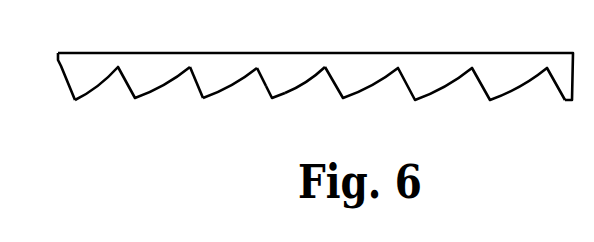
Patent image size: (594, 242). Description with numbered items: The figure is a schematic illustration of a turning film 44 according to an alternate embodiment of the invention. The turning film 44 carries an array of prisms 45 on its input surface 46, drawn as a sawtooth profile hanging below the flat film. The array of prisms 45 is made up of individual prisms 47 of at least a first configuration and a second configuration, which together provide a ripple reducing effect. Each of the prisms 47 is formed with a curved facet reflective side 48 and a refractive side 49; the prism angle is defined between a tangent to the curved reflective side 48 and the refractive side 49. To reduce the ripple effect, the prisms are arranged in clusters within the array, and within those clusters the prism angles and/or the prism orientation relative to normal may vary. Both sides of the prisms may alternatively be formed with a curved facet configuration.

The turning film 44 is at (507, 52).
The array of prisms 45 is at (466, 112).
The input surface 46 is at (203, 98).
The prisms 47 is at (273, 98).
The curved facet reflective side 48 is at (303, 85).
The refractive side 49 is at (263, 80).